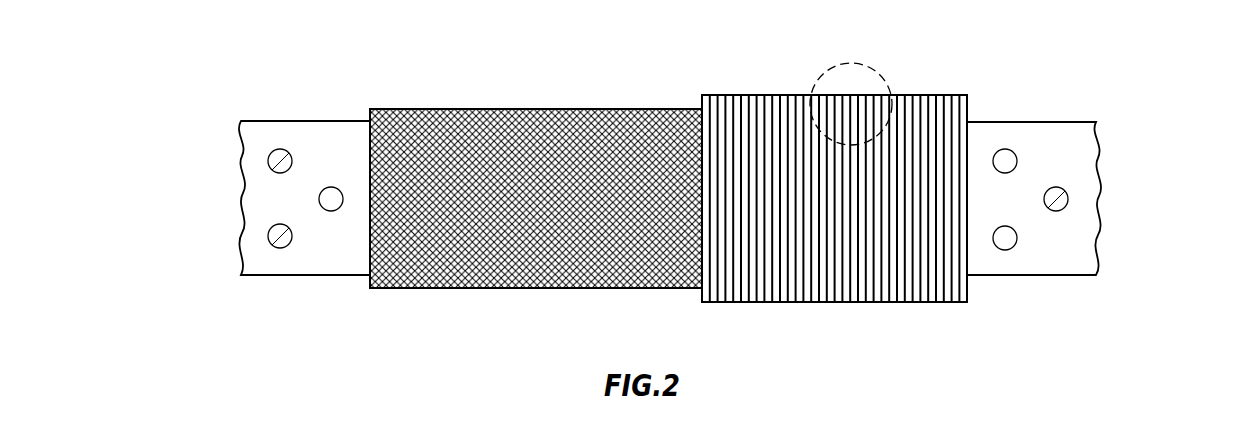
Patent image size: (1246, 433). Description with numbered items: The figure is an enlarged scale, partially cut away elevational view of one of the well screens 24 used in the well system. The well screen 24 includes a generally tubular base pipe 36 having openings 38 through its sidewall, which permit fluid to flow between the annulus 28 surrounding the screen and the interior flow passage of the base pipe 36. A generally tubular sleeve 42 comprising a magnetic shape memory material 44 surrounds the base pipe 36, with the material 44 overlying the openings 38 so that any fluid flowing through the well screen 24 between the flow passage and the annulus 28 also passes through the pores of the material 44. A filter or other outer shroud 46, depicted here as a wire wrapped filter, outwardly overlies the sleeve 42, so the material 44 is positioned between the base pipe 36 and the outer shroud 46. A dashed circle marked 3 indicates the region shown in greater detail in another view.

The detail region shown in FIG. 3 is at (878, 72).
The well screen 24 is at (700, 188).
The annulus 28 is at (668, 202).
The base pipe 36 is at (1074, 268).
The openings 38 is at (261, 157).
The sleeve 42 is at (536, 200).
The magnetic shape memory material 44 is at (432, 122).
The outer shroud 46 is at (887, 295).